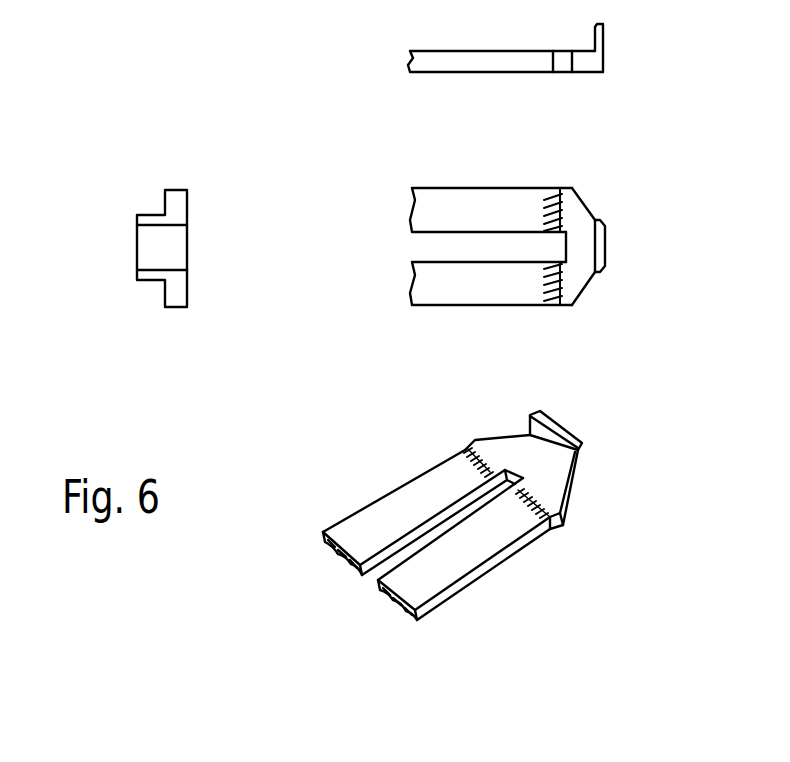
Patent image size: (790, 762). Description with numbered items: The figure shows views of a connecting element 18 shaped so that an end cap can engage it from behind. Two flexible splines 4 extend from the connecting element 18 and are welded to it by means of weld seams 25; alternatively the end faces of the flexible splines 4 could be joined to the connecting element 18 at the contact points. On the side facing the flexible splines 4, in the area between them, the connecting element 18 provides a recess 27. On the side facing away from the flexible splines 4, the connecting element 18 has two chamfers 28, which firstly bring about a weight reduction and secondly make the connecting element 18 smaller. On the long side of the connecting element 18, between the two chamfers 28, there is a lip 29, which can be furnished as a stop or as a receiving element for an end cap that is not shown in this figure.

The flexible splines 4 is at (460, 63).
The connecting element 18 is at (158, 247).
The weld seams 25 is at (560, 188).
The recess 27 is at (560, 247).
The chamfers 28 is at (584, 196).
The lip 29 is at (600, 26).